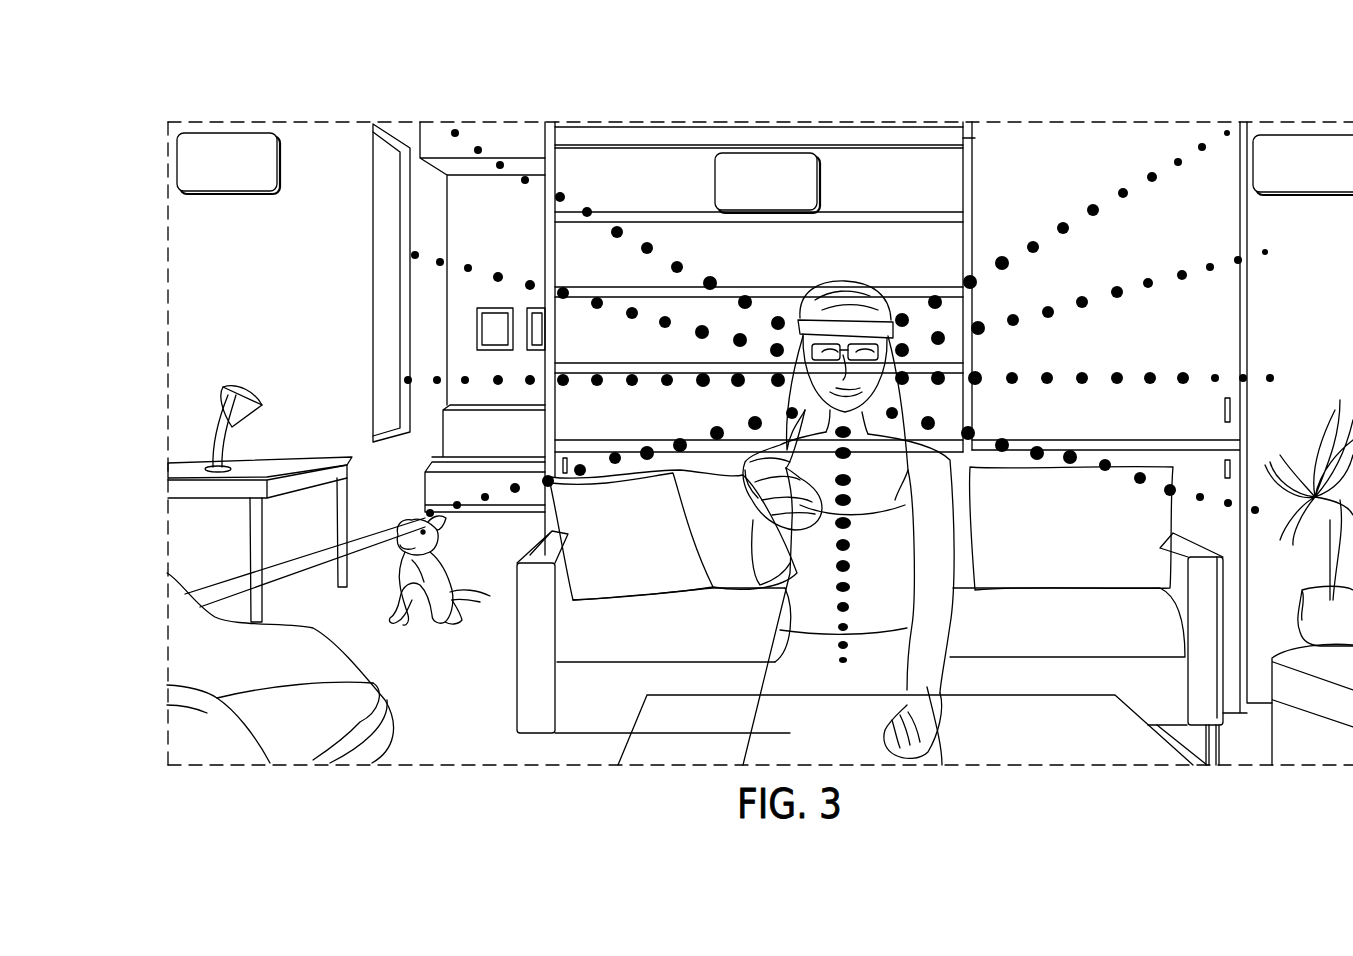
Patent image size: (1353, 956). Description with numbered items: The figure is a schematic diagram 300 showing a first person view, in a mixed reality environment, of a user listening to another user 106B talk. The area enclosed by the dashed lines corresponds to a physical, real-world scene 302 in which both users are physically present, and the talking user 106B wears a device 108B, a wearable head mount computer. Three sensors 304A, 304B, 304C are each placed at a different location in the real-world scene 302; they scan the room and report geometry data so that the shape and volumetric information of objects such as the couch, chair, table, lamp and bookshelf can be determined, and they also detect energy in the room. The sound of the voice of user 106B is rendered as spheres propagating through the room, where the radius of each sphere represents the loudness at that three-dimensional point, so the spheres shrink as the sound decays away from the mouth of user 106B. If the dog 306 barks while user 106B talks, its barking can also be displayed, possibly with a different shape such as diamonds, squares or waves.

The schematic diagram 300 is at (262, 75).
The physical, real-world scene 302 is at (541, 118).
The sensor 304A is at (228, 163).
The sensor 304B is at (767, 183).
The sensor 304C is at (1303, 165).
The dog 306 is at (405, 518).
The user 106B is at (862, 284).
The device 108B is at (884, 330).